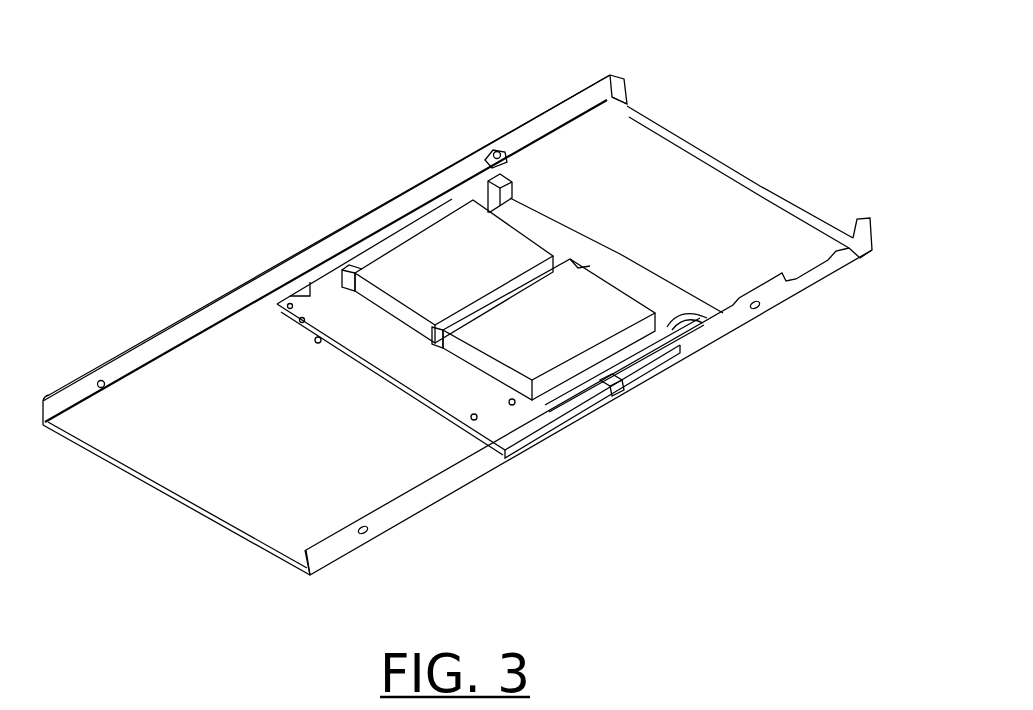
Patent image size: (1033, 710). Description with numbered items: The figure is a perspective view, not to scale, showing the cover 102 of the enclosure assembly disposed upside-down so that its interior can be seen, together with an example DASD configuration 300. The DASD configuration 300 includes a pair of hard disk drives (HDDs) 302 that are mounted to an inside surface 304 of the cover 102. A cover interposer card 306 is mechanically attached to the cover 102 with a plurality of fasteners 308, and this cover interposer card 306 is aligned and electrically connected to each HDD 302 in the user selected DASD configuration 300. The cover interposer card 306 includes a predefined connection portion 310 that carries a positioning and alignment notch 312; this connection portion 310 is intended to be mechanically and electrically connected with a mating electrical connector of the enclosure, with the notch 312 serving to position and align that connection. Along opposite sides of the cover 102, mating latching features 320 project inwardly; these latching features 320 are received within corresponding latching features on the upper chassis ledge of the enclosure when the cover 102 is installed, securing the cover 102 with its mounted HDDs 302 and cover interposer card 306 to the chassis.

The DASD configuration 300 is at (457, 128).
The cover 102 is at (350, 213).
The hard disk drive 302 is at (455, 266).
The inside surface 304 is at (145, 385).
The cover interposer card 306 is at (427, 370).
The fastener 308 is at (317, 344).
The predefined connection portion 310 is at (288, 308).
The positioning and alignment notch 312 is at (301, 323).
The latching feature 320 is at (500, 152).